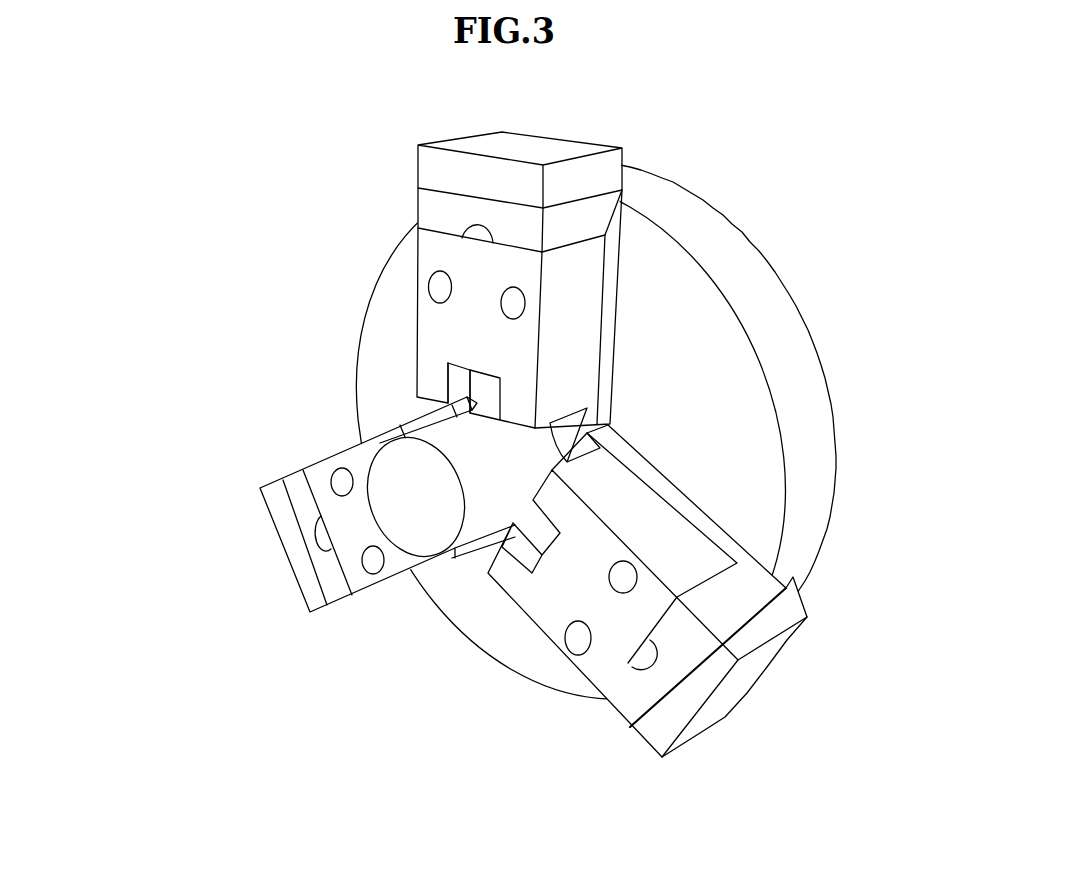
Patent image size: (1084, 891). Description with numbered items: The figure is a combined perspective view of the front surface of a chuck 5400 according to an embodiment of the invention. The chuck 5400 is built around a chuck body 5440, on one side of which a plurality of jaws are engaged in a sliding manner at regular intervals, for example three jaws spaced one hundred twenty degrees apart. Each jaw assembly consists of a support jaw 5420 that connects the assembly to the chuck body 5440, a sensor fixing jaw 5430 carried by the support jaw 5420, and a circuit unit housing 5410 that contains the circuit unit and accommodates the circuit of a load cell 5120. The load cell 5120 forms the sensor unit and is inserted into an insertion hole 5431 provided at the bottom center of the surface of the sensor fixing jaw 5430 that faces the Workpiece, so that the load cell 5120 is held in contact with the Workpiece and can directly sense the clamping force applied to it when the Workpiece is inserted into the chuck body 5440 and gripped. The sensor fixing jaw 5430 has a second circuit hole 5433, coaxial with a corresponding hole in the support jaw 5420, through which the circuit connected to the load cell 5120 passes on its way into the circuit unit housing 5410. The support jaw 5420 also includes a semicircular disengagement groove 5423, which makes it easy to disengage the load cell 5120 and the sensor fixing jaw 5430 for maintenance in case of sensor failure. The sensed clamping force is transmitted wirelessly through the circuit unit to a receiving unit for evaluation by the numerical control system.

The chuck 5400 is at (145, 210).
The circuit unit housing 5410 is at (418, 163).
The support jaw 5420 is at (418, 200).
The disengagement groove 5423 is at (625, 190).
The sensor fixing jaw 5430 is at (418, 262).
The insertion hole 5431 is at (405, 412).
The second circuit hole 5433 is at (520, 302).
The chuck body 5440 is at (835, 517).
The load cell 5120 is at (463, 378).
The workpiece Workpiece is at (368, 512).